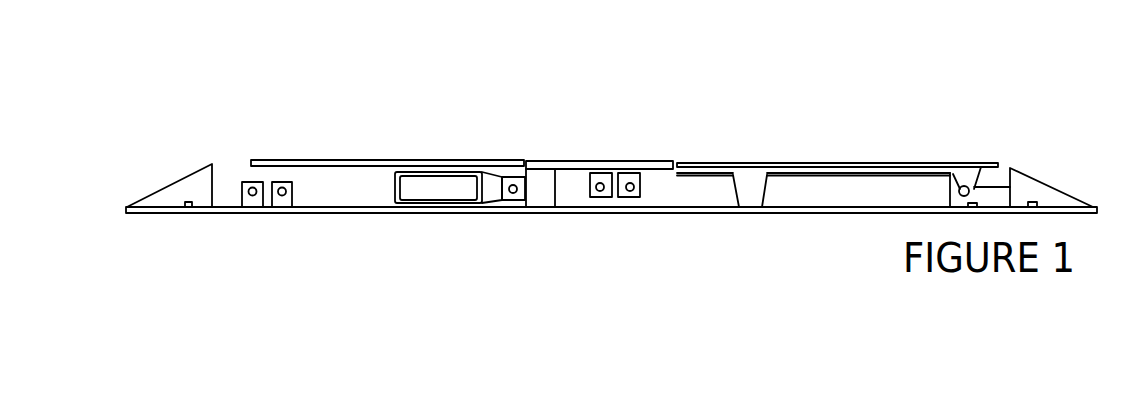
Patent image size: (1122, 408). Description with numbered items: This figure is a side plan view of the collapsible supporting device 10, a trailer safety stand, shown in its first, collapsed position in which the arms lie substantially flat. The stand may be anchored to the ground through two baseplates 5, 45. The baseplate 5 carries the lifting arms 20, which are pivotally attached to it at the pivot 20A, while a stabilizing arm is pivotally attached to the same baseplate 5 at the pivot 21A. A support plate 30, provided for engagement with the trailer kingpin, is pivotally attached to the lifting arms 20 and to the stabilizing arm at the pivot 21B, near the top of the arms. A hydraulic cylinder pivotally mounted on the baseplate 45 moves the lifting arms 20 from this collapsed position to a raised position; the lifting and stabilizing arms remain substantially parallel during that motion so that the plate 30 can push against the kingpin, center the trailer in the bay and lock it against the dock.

The baseplate 5 is at (262, 213).
The collapsible supporting device 10 is at (472, 142).
The lifting arms 20 is at (268, 176).
The pivot 20A is at (248, 189).
The pivot 21A is at (285, 189).
The pivot 21B is at (630, 190).
The support plate 30 is at (648, 160).
The baseplate 45 is at (1045, 207).